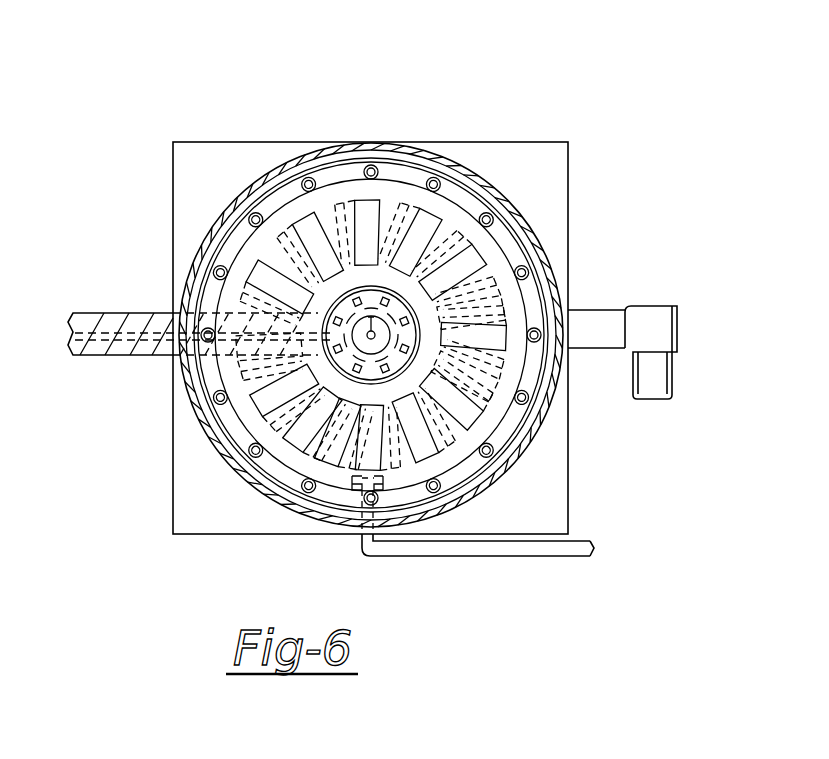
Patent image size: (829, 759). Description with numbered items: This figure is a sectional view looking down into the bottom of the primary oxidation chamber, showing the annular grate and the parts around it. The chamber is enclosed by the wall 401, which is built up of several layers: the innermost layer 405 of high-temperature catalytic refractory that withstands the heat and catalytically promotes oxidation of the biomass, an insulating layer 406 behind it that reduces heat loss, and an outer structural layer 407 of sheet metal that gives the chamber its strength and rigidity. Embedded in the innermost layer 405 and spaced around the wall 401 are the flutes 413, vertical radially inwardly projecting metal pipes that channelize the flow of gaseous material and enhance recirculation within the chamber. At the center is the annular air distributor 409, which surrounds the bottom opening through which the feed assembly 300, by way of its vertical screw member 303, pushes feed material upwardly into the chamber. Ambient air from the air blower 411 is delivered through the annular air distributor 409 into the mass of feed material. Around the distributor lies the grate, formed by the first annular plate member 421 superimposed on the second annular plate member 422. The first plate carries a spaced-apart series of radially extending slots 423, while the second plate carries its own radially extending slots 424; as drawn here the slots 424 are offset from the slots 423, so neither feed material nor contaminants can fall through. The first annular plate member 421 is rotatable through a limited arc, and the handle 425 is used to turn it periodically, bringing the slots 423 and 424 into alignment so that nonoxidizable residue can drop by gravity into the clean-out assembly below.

The feed assembly 300 is at (127, 356).
The vertical screw member 303 is at (370, 338).
The wall 401 is at (520, 227).
The innermost layer 405 is at (260, 205).
The insulating layer 406 is at (268, 183).
The structural layer 407 is at (322, 116).
The annular air distributor 409 is at (345, 315).
The air blower 411 is at (657, 386).
The flutes 413 is at (414, 176).
The first annular plate member 421 is at (495, 300).
The second annular plate member 422 is at (507, 325).
The radially extending slots 423 is at (433, 227).
The radially extending slots 424 is at (500, 215).
The handle 425 is at (437, 557).